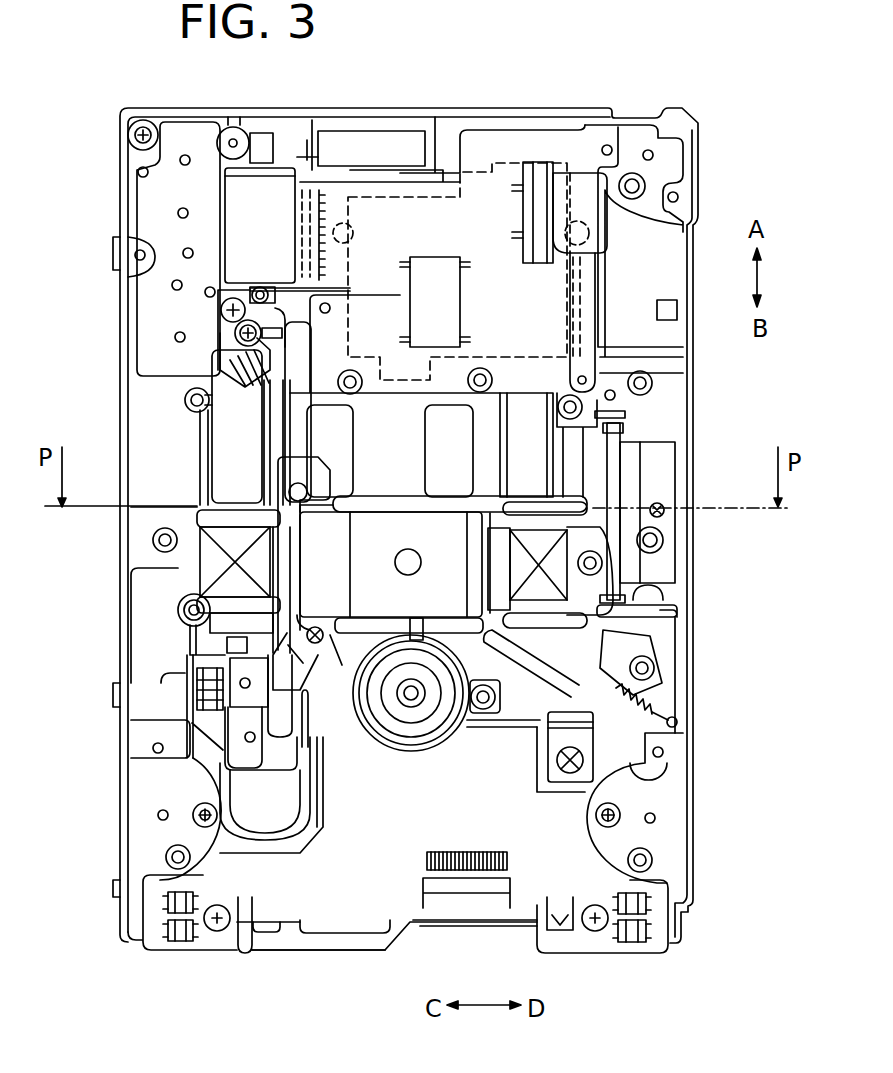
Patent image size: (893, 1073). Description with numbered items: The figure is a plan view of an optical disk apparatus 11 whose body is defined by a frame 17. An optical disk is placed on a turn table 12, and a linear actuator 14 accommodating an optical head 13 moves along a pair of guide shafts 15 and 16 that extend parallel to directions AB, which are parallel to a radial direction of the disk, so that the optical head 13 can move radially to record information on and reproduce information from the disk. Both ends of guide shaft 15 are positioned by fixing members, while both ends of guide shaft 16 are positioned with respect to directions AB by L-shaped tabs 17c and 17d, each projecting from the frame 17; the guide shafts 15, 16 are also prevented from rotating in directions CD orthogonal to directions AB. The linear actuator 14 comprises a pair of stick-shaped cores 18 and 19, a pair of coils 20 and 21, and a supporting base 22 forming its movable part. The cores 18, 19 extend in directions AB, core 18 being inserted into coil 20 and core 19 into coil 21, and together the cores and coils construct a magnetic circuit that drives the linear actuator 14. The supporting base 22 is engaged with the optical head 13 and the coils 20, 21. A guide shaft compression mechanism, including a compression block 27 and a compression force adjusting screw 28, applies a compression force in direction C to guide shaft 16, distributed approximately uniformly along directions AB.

The optical disk apparatus 11 is at (460, 57).
The turn table 12 is at (427, 737).
The optical head 13 is at (437, 532).
The linear actuator 14 is at (176, 584).
The guide shaft 15 is at (280, 727).
The guide shaft 16 is at (625, 430).
The frame 17 is at (370, 890).
The L-shaped tab 17c is at (625, 413).
The L-shaped tab 17d is at (612, 625).
The core 18 is at (237, 458).
The core 19 is at (537, 420).
The coil 20 is at (215, 562).
The coil 21 is at (560, 580).
The supporting base 22 is at (370, 497).
The compression block 27 is at (668, 483).
The compression force adjusting screw 28 is at (668, 512).